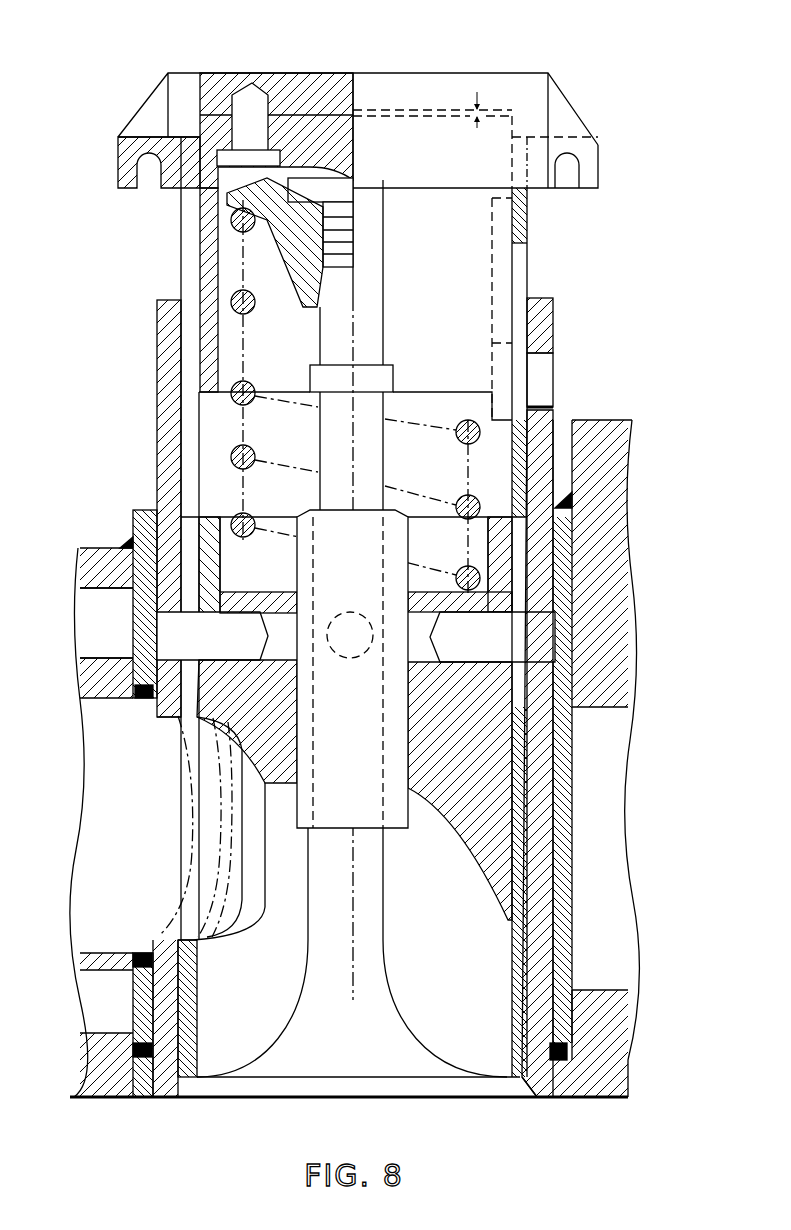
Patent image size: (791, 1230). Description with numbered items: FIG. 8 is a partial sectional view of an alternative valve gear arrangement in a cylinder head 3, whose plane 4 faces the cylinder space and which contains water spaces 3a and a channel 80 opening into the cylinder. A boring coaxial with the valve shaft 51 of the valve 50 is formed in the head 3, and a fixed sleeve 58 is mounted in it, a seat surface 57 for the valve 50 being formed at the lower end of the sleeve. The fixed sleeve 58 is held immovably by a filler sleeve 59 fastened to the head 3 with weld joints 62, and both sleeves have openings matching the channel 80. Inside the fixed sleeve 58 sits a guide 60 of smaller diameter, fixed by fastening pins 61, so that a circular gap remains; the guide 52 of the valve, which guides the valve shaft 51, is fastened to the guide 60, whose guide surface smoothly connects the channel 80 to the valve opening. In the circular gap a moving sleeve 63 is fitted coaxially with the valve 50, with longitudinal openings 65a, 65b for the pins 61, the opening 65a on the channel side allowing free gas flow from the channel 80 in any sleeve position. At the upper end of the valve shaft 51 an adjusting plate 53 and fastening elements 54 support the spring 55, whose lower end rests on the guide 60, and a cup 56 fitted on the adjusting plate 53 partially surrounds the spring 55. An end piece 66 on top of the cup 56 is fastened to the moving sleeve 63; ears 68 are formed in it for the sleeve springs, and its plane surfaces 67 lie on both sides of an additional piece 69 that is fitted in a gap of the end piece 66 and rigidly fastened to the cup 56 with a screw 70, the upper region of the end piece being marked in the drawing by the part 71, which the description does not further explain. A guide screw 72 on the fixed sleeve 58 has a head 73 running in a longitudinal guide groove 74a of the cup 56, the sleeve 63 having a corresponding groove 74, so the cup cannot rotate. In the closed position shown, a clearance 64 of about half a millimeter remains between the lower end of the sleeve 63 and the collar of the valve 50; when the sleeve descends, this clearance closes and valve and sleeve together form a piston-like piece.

The cylinder head 3 is at (618, 1067).
The water spaces 3a is at (100, 602).
The plane of the head 4 is at (612, 1100).
The valve 50 is at (402, 1087).
The valve shaft 51 is at (378, 912).
The guide 52 is at (400, 815).
The adjusting plate 53 is at (280, 228).
The fastening elements 54 is at (232, 198).
The spring 55 is at (240, 397).
The cup 56 is at (205, 293).
The seat surface 57 is at (523, 1087).
The fixed sleeve 58 is at (153, 1080).
The filler sleeve 59 is at (142, 1012).
The guide 60 is at (480, 790).
The fastening pins 61 is at (165, 630).
The weld joints 62 is at (127, 545).
The moving sleeve 63 is at (190, 982).
The clearance 64 is at (200, 1068).
The longitudinal opening 65a is at (188, 540).
The longitudinal opening 65b is at (520, 575).
The end piece 66 is at (497, 80).
The plane surfaces 67 is at (420, 72).
The ears 68 is at (120, 158).
The additional piece 69 is at (330, 80).
The screw 70 is at (255, 105).
The top plate 71 is at (218, 72).
The guide screw 72 is at (548, 380).
The head 73 is at (500, 415).
The groove 74 is at (525, 290).
The longitudinal guide groove 74a is at (520, 232).
The channel 80 is at (82, 790).